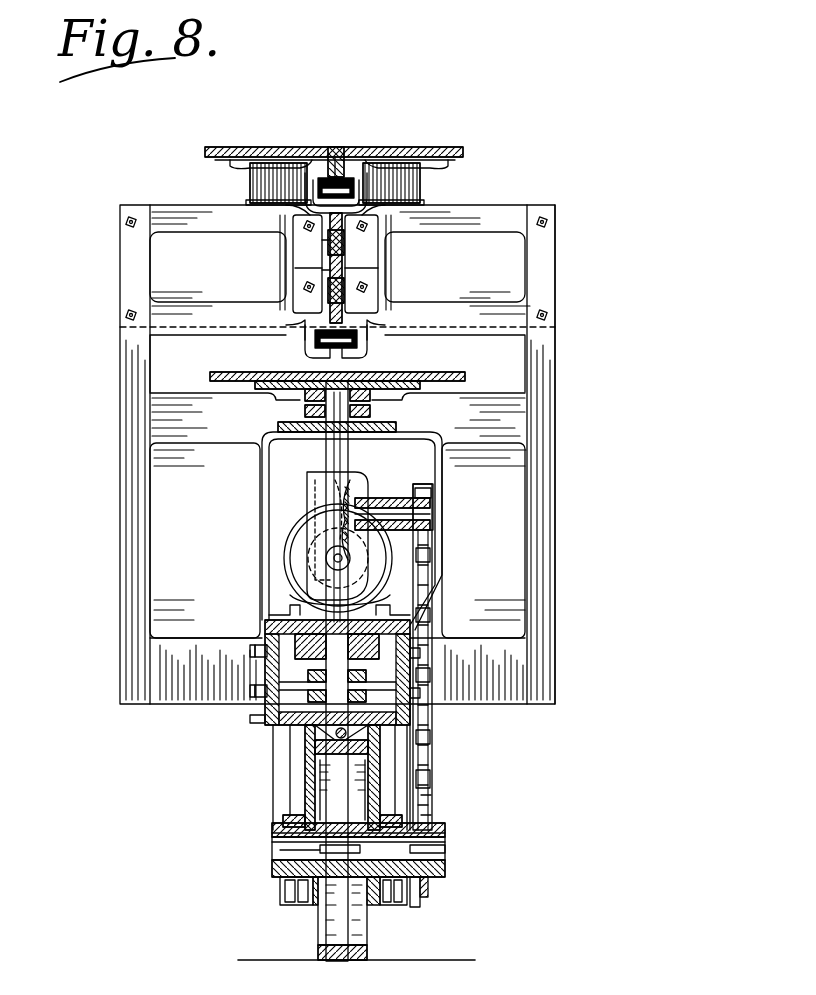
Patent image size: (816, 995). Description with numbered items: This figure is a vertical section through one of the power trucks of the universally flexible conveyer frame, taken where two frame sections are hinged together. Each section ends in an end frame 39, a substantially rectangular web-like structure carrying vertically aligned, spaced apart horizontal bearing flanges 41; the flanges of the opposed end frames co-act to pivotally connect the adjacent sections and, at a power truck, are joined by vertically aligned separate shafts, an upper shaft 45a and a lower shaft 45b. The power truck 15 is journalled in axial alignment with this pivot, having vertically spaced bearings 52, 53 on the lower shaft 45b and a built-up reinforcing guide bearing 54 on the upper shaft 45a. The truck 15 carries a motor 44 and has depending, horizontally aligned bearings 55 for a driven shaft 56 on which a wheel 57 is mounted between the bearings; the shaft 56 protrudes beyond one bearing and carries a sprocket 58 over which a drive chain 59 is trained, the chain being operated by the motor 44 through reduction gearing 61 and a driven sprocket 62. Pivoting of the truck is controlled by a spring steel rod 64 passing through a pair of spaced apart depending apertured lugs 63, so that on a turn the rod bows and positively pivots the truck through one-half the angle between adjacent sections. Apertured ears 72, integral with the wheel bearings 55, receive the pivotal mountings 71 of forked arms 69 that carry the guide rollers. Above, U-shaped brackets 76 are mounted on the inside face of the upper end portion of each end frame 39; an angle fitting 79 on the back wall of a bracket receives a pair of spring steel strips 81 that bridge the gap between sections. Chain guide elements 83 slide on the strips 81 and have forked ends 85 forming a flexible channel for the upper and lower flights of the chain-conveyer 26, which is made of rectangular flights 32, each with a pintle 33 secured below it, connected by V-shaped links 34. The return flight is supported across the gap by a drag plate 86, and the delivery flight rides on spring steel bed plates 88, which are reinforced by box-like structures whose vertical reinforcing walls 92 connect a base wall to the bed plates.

The power truck 15 is at (265, 730).
The chain-conveyer 26 is at (350, 148).
The flight 32 is at (448, 150).
The pintle 33 is at (350, 155).
The link 34 is at (334, 150).
The end frame 39 is at (558, 538).
The bearing flange 41 is at (300, 415).
The motor 44 is at (295, 552).
The upper shaft 45a is at (340, 450).
The lower shaft 45b is at (330, 660).
The bearing 52 is at (300, 620).
The bearing 53 is at (320, 740).
The guide bearing 54 is at (355, 432).
The wheel bearing 55 is at (272, 833).
The driven shaft 56 is at (285, 850).
The wheel 57 is at (318, 925).
The sprocket 58 is at (435, 830).
The drive chain 59 is at (433, 772).
The worm 61 is at (380, 505).
The driven sprocket 62 is at (430, 512).
The lug 63 is at (375, 735).
The spring steel rod 64 is at (300, 730).
The forked arm 69 is at (285, 903).
The pivotal mounting 71 is at (280, 887).
The apertured ear 72 is at (375, 900).
The U-shaped bracket 76 is at (503, 205).
The angle fitting 79 is at (318, 270).
The spring steel strip 81 is at (338, 290).
The chain guide element 83 is at (322, 243).
The forked end 85 is at (322, 185).
The drag plate 86 is at (395, 372).
The bed plate 88 is at (257, 163).
The vertical reinforcing wall 92 is at (262, 185).